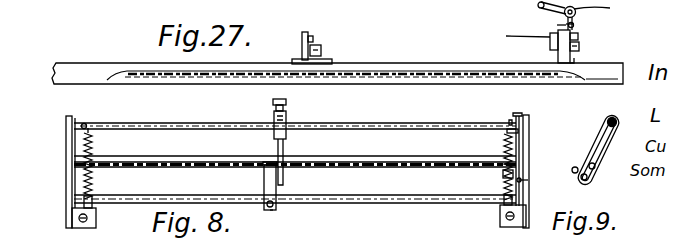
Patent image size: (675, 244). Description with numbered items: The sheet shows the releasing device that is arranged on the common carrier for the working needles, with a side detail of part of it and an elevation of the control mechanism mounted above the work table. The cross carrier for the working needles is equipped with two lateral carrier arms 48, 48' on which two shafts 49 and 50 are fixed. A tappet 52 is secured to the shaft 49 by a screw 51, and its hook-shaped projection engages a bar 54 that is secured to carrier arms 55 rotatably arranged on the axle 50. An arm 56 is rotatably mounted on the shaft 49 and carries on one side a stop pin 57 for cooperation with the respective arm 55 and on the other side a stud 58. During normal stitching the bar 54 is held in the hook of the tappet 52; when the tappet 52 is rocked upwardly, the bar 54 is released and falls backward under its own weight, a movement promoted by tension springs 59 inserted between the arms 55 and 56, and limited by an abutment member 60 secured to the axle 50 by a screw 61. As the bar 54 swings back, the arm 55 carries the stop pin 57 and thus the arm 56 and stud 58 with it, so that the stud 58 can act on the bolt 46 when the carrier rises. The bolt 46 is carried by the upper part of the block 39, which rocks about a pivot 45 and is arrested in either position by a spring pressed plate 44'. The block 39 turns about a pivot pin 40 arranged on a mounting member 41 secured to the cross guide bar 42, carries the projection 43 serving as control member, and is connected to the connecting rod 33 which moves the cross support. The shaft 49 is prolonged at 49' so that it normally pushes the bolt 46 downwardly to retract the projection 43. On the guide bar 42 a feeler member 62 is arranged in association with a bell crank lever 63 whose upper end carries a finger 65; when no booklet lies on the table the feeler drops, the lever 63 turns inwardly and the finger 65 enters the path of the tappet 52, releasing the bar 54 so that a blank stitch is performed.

In FIG. 27, the connecting rod 33 is at (580, 46).
In FIG. 27, the block 39 is at (575, 26).
In FIG. 27, the pivot pin 40 is at (518, 38).
In FIG. 27, the mounting member 41 is at (562, 50).
In FIG. 27, the cross guide bar 42 is at (516, 66).
In FIG. 27, the projection 43 is at (576, 9).
In FIG. 27, the spring pressed plate 44' is at (606, 10).
In FIG. 27, the pivot 45 is at (557, 25).
In FIG. 27, the bolt 46 is at (538, 6).
In FIG. 8, the lateral carrier arm 48 is at (535, 170).
In FIG. 8, the lateral carrier arm 48' is at (68, 159).
In FIG. 8, the shaft 49 is at (295, 115).
In FIG. 9, the shaft 49 is at (597, 150).
In FIG. 8, the prolongation of shaft 49' is at (503, 108).
In FIG. 8, the shaft 50 is at (199, 195).
In FIG. 8, the screw 51 is at (287, 103).
In FIG. 8, the tappet 52 is at (284, 152).
In FIG. 8, the bar 54 is at (203, 162).
In FIG. 8, the carrier arm 55 is at (94, 196).
In FIG. 8, the arm 56 is at (519, 133).
In FIG. 9, the arm 56 is at (607, 118).
In FIG. 8, the stop pin 57 is at (502, 176).
In FIG. 9, the stop pin 57 is at (592, 163).
In FIG. 8, the stud 58 is at (529, 182).
In FIG. 9, the stud 58 is at (581, 174).
In FIG. 8, the tension spring 59 is at (93, 145).
In FIG. 8, the abutment member 60 is at (264, 184).
In FIG. 8, the screw 61 is at (276, 210).
In FIG. 27, the feeler member 62 is at (321, 50).
In FIG. 27, the bell crank lever 63 is at (302, 37).
In FIG. 27, the finger 65 is at (313, 38).